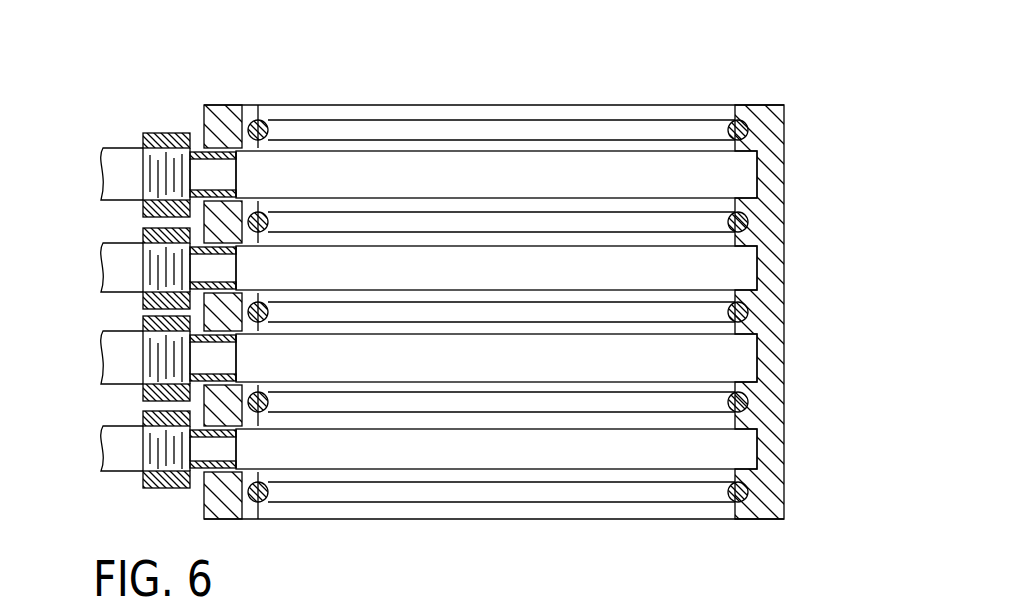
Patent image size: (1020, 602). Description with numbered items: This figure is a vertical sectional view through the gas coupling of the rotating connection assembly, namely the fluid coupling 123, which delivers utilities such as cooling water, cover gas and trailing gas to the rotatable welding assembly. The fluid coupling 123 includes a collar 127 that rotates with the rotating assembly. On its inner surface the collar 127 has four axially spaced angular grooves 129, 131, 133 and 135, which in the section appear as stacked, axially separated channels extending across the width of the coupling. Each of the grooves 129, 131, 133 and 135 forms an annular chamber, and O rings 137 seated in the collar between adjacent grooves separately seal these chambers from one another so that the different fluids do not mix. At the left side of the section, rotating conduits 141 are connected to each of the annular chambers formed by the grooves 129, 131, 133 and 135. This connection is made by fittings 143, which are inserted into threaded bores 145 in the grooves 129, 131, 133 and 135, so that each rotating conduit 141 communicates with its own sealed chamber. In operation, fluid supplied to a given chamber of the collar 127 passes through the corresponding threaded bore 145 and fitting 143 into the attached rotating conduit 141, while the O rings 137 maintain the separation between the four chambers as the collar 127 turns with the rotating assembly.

The fluid coupling 123 is at (460, 82).
The collar 127 is at (760, 104).
The angular groove 129 is at (742, 178).
The angular groove 131 is at (740, 267).
The angular groove 133 is at (738, 362).
The angular groove 135 is at (735, 449).
The O rings 137 is at (542, 317).
The rotating conduits 141 is at (117, 165).
The fittings 143 is at (176, 134).
The threaded bores 145 is at (217, 460).